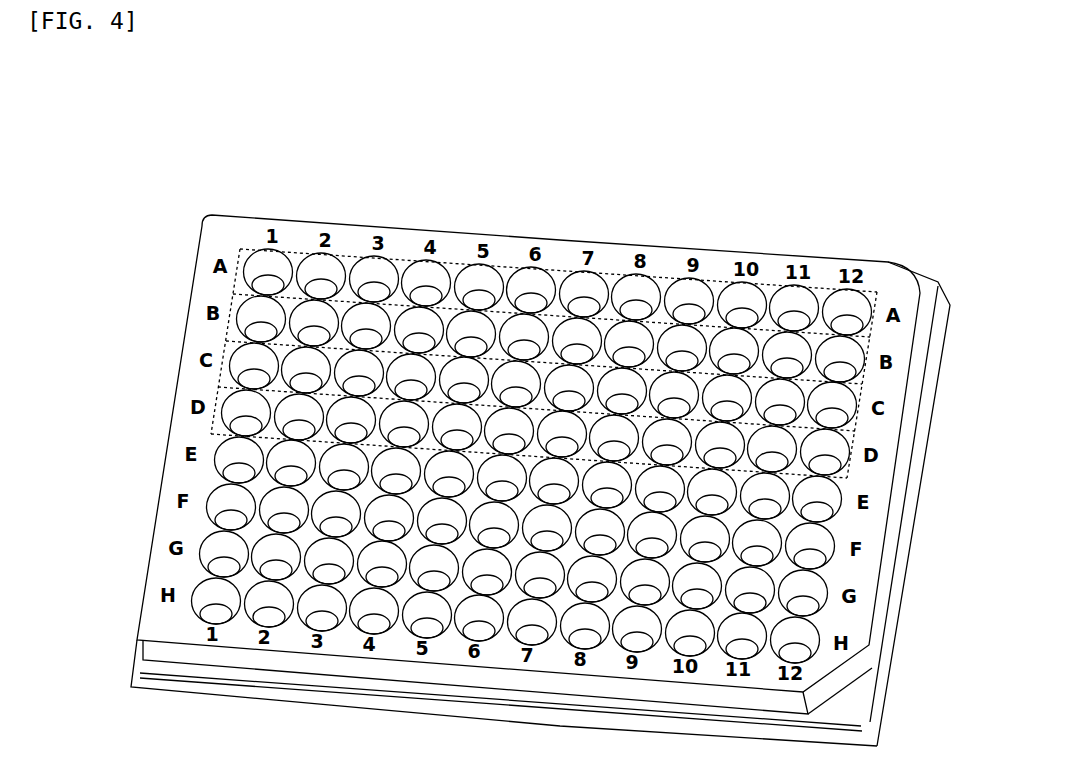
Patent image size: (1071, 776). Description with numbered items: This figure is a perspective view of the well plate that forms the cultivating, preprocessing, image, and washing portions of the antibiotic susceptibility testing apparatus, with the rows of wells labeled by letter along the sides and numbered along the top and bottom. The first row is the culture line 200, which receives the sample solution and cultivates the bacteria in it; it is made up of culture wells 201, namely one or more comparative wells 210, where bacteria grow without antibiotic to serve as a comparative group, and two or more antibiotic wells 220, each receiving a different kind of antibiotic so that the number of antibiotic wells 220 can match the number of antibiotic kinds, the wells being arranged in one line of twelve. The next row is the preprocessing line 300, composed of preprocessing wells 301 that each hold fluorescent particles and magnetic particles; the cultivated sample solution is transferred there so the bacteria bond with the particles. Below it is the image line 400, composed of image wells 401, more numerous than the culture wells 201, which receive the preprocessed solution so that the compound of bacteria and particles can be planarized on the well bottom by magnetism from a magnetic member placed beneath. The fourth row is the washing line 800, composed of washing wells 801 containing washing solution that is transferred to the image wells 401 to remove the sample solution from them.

The culture line 200 is at (186, 263).
The culture wells 201 is at (236, 147).
The comparative well 210 is at (263, 266).
The antibiotic wells 220 is at (321, 268).
The preprocessing line 300 is at (178, 309).
The preprocessing wells 301 is at (521, 330).
The image line 400 is at (171, 356).
The image wells 401 is at (670, 390).
The washing line 800 is at (163, 403).
The washing wells 801 is at (827, 444).